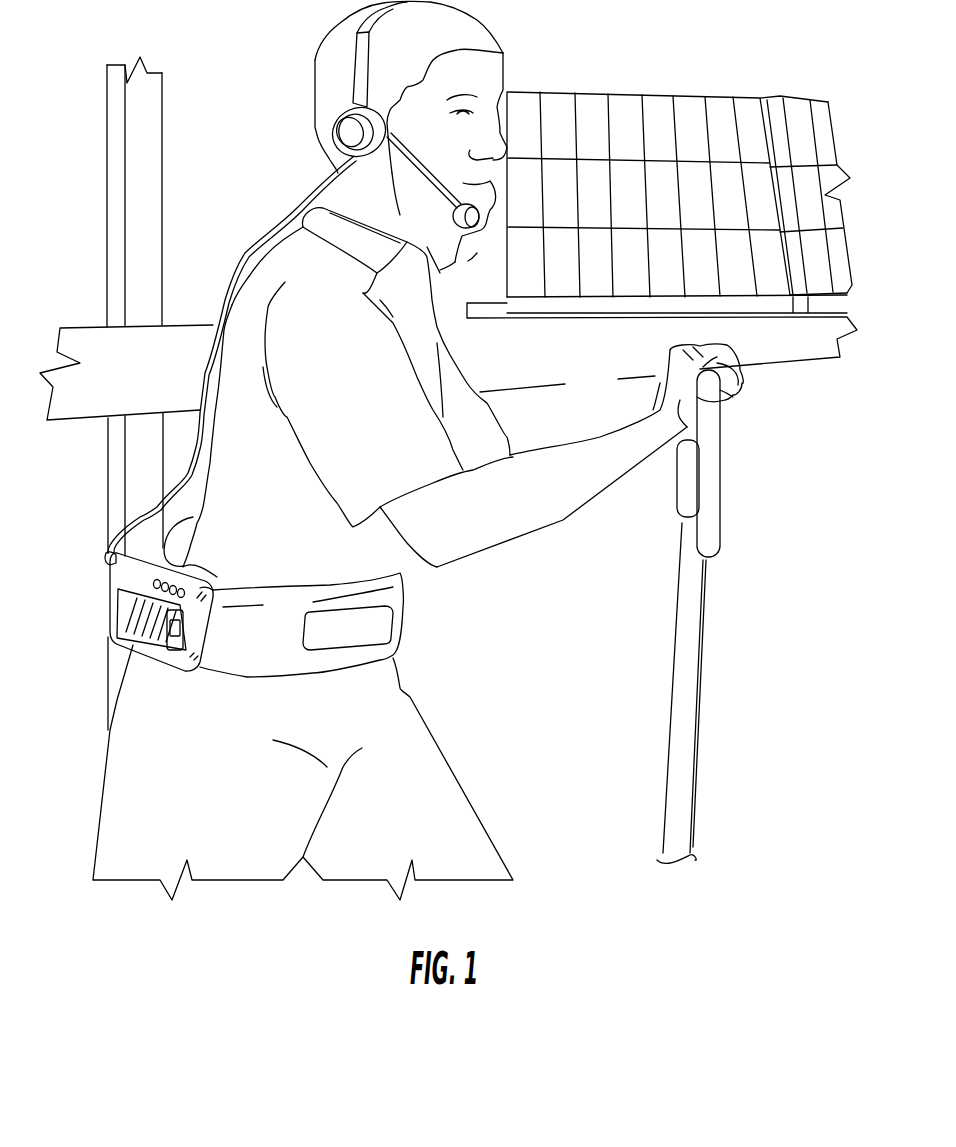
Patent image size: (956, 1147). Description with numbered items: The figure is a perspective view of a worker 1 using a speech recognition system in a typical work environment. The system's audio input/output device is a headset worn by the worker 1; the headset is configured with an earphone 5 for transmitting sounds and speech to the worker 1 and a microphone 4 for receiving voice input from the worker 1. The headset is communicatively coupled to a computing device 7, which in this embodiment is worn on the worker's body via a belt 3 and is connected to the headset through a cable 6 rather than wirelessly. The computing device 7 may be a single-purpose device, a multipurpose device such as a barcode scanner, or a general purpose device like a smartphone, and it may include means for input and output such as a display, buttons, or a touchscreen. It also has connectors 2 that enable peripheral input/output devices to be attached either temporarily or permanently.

The worker 1 is at (418, 536).
The connectors 2 is at (108, 568).
The belt 3 is at (400, 617).
The microphone 4 is at (463, 236).
The earphone 5 is at (340, 110).
The cable 6 is at (205, 368).
The computing device 7 is at (130, 652).